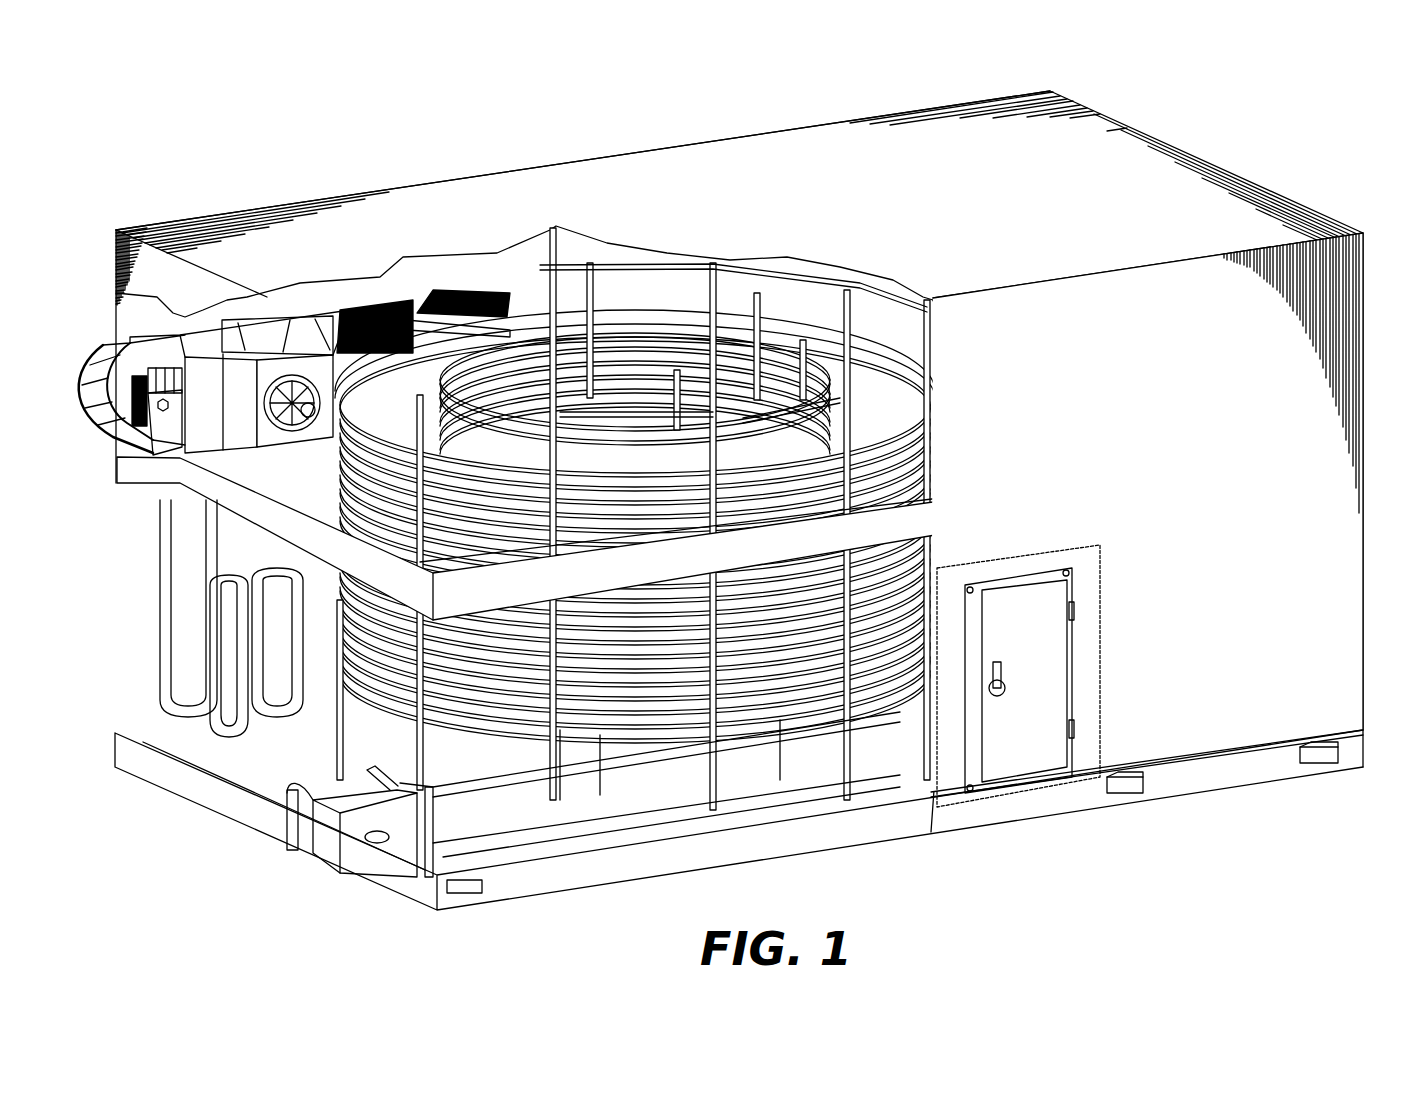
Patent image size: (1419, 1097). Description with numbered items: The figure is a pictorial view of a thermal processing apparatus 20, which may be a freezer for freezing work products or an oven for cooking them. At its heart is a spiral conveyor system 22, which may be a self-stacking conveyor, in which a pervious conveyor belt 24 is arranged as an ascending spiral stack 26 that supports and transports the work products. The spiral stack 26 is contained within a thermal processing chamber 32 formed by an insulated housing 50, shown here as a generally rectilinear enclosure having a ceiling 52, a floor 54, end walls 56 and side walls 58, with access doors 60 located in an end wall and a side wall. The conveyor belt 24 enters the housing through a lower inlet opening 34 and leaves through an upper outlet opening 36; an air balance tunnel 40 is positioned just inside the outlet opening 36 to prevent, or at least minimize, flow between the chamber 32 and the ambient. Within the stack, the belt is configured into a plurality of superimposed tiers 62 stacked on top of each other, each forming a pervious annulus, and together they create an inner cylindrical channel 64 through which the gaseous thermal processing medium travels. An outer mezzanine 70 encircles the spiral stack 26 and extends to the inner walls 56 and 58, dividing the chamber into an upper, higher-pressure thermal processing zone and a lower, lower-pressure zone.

The thermal processing apparatus 20 is at (733, 505).
The spiral conveyor system 22 is at (665, 280).
The conveyor belt 24 is at (788, 335).
The spiral stack 26 is at (335, 643).
The thermal processing chamber 32 is at (1205, 150).
The lower inlet opening 34 is at (398, 860).
The upper outlet opening 36 is at (115, 343).
The air balance tunnel 40 is at (185, 318).
The insulated housing 50 is at (850, 119).
The ceiling 52 is at (952, 205).
The floor 54 is at (620, 887).
The end walls 56 is at (1365, 500).
The side walls 58 is at (1226, 531).
The access doors 60 is at (1046, 696).
The tiers 62 is at (800, 718).
The inner cylindrical channel 64 is at (620, 400).
The outer mezzanine 70 is at (235, 470).